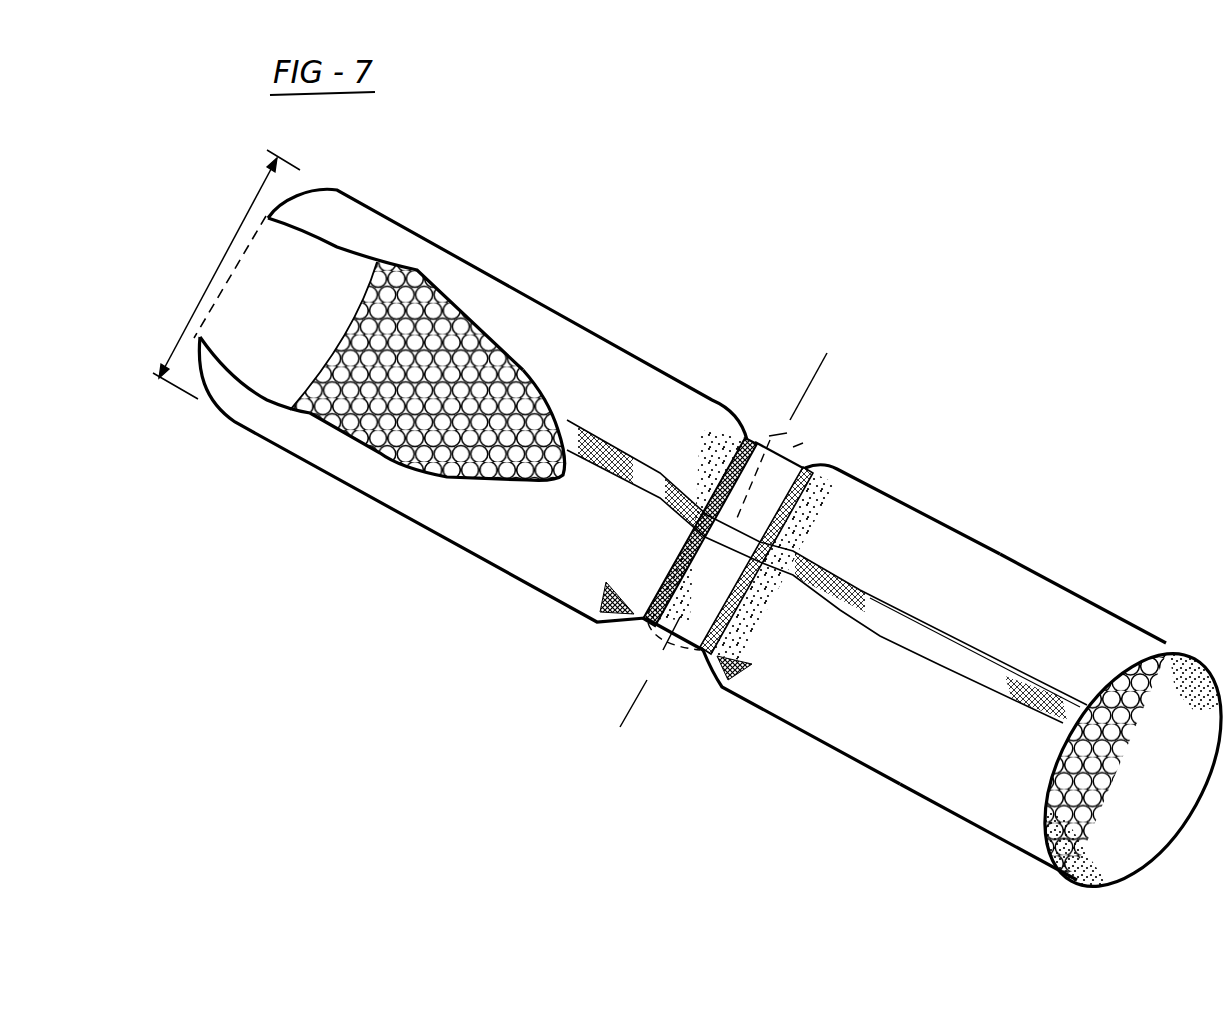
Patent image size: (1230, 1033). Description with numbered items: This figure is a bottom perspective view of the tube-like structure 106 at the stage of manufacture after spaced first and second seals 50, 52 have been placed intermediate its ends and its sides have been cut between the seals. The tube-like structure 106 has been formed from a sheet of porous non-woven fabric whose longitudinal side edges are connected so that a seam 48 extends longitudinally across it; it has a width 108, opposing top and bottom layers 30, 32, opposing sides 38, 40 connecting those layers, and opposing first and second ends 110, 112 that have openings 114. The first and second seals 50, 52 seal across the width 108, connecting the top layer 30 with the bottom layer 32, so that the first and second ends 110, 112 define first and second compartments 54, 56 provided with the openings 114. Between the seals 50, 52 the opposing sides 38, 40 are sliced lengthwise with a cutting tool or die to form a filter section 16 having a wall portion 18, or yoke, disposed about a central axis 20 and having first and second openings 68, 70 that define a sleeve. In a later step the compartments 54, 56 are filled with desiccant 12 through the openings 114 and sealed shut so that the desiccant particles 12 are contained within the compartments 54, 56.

The desiccant 12 is at (460, 335).
The filter section 16 is at (682, 667).
The wall portion 18 is at (773, 433).
The central axis 20 is at (828, 392).
The top layer 30 is at (1190, 815).
The bottom layer 32 is at (907, 522).
The side 38 is at (740, 673).
The side 40 is at (1150, 633).
The seam 48 is at (613, 450).
The first seal 50 is at (748, 436).
The second seal 52 is at (820, 466).
The first compartment 54 is at (525, 577).
The second compartment 56 is at (887, 757).
The first opening 68 is at (803, 443).
The second opening 70 is at (633, 647).
The tube-like structure 106 is at (460, 593).
The width 108 is at (251, 200).
The first end 110 is at (253, 447).
The second end 112 is at (1090, 593).
The opening 114 is at (250, 297).